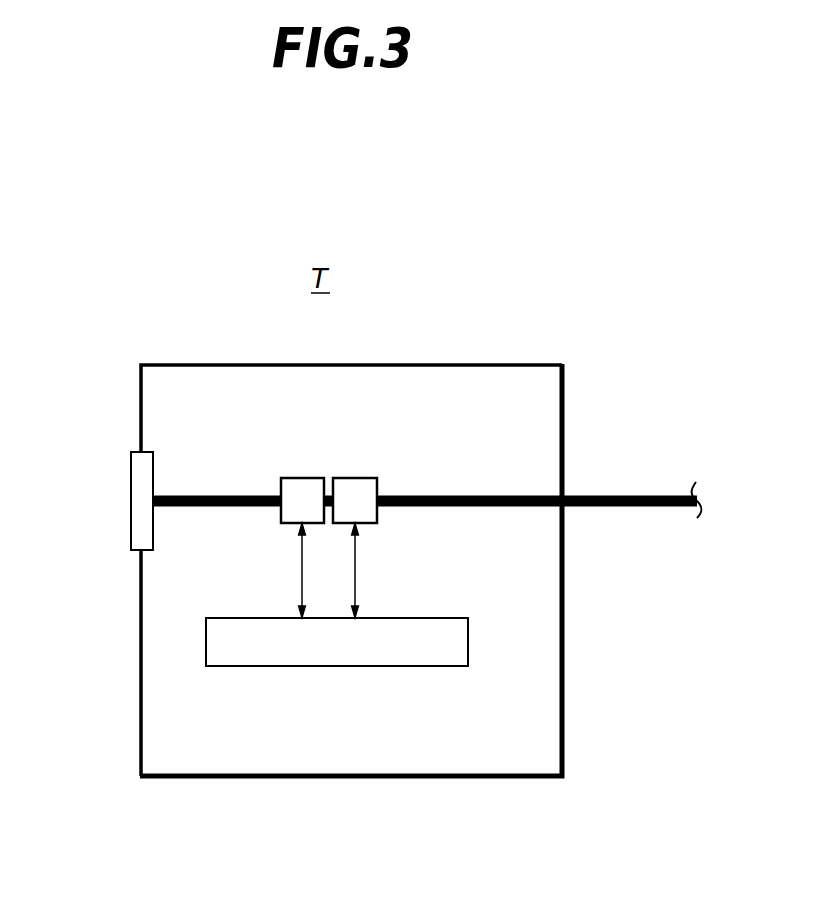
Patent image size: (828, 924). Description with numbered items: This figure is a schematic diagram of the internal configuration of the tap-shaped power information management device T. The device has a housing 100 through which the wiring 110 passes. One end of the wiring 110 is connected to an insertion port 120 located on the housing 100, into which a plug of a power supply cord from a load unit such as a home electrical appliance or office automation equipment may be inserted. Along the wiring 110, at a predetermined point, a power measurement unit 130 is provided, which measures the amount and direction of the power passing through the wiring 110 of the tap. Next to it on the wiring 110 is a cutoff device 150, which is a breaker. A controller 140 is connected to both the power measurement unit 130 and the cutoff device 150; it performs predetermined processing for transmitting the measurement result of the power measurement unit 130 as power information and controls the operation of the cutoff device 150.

The housing 100 is at (373, 365).
The wiring 110 is at (605, 507).
The insertion port 120 is at (131, 498).
The power measurement unit 130 is at (303, 478).
The controller 140 is at (470, 639).
The cutoff device 150 is at (353, 478).